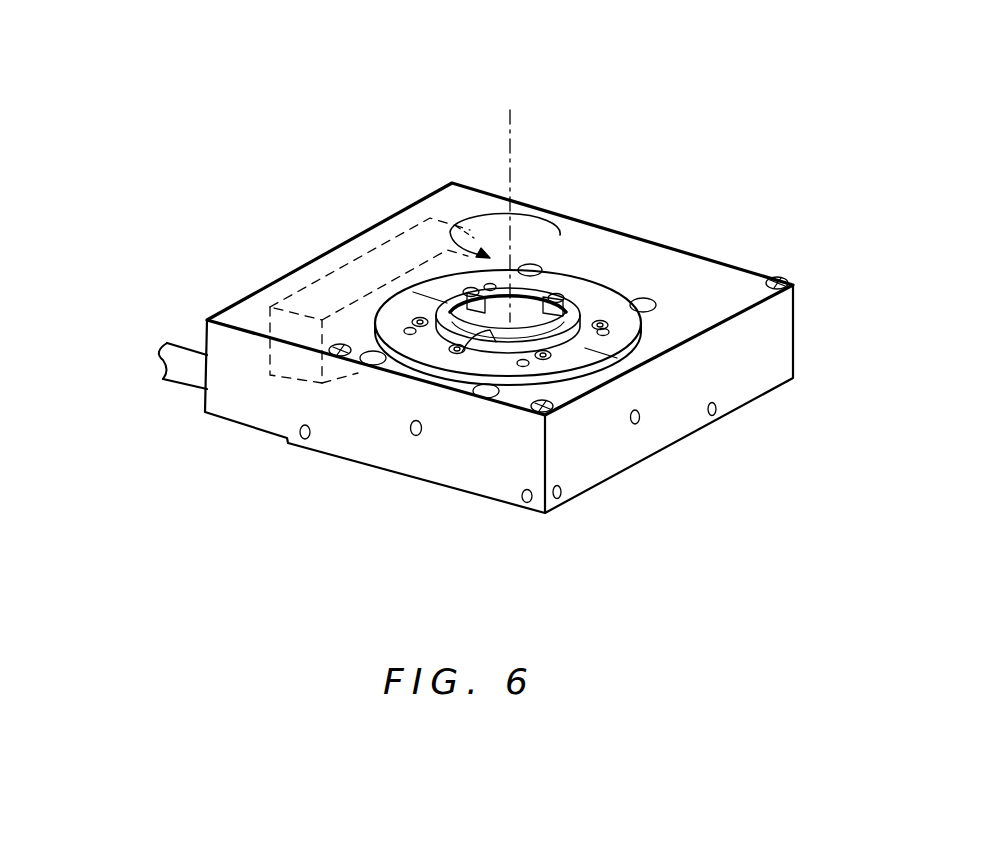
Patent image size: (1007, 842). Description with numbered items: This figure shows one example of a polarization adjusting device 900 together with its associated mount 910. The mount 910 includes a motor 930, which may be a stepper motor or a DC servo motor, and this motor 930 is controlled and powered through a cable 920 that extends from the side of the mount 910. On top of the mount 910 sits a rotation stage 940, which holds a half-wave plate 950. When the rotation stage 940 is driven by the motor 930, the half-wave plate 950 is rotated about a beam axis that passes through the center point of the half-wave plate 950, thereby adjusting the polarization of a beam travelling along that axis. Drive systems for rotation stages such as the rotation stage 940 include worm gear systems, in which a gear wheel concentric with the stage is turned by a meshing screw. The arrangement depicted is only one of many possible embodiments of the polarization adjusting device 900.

The polarization adjusting device 900 is at (350, 121).
The mount 910 is at (793, 338).
The cable 920 is at (180, 386).
The motor 930 is at (350, 263).
The rotation stage 940 is at (607, 287).
The half-wave plate 950 is at (462, 352).